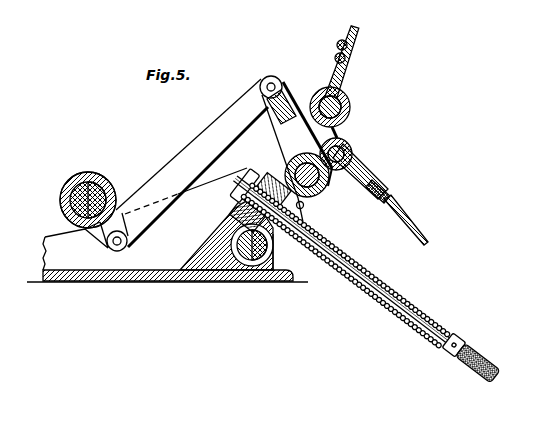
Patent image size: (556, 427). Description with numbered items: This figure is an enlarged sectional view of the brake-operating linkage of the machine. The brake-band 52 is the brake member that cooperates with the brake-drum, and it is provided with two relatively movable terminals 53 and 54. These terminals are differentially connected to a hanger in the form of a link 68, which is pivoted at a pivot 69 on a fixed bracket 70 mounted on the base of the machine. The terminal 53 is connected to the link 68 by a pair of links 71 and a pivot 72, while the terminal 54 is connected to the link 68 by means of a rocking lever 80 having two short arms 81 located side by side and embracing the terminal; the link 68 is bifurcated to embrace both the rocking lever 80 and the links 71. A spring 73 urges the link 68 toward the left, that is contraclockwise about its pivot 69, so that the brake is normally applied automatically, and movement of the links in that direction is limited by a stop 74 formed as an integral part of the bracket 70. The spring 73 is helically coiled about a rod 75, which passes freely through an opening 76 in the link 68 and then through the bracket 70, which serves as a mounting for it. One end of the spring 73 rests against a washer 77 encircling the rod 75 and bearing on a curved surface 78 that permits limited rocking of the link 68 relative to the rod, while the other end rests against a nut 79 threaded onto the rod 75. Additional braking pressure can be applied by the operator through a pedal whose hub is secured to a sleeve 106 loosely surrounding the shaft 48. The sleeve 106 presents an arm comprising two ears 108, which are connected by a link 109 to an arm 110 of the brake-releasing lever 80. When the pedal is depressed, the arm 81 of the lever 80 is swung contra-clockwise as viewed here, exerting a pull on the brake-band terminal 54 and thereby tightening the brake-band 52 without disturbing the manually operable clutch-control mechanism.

The shaft 48 is at (62, 200).
The sleeve 106 is at (108, 179).
The ears 108 is at (126, 224).
The link 109 is at (210, 142).
The arm 110 is at (297, 109).
The brake-band terminal 53 is at (349, 90).
The links 71 is at (338, 132).
The brake-band terminal 54 is at (352, 154).
The short arms 81 is at (356, 165).
The brake-band 52 is at (396, 208).
The rocking lever 80 is at (327, 186).
The link 68 is at (304, 206).
The curved surface 78 is at (306, 220).
The pivot 72 is at (306, 164).
The stop 74 is at (252, 180).
The opening 76 is at (238, 180).
The bracket 70 is at (222, 230).
The washer 77 is at (268, 236).
The pivot 69 is at (276, 267).
The spring 73 is at (391, 198).
The nut 79 is at (477, 249).
The rod 75 is at (482, 261).